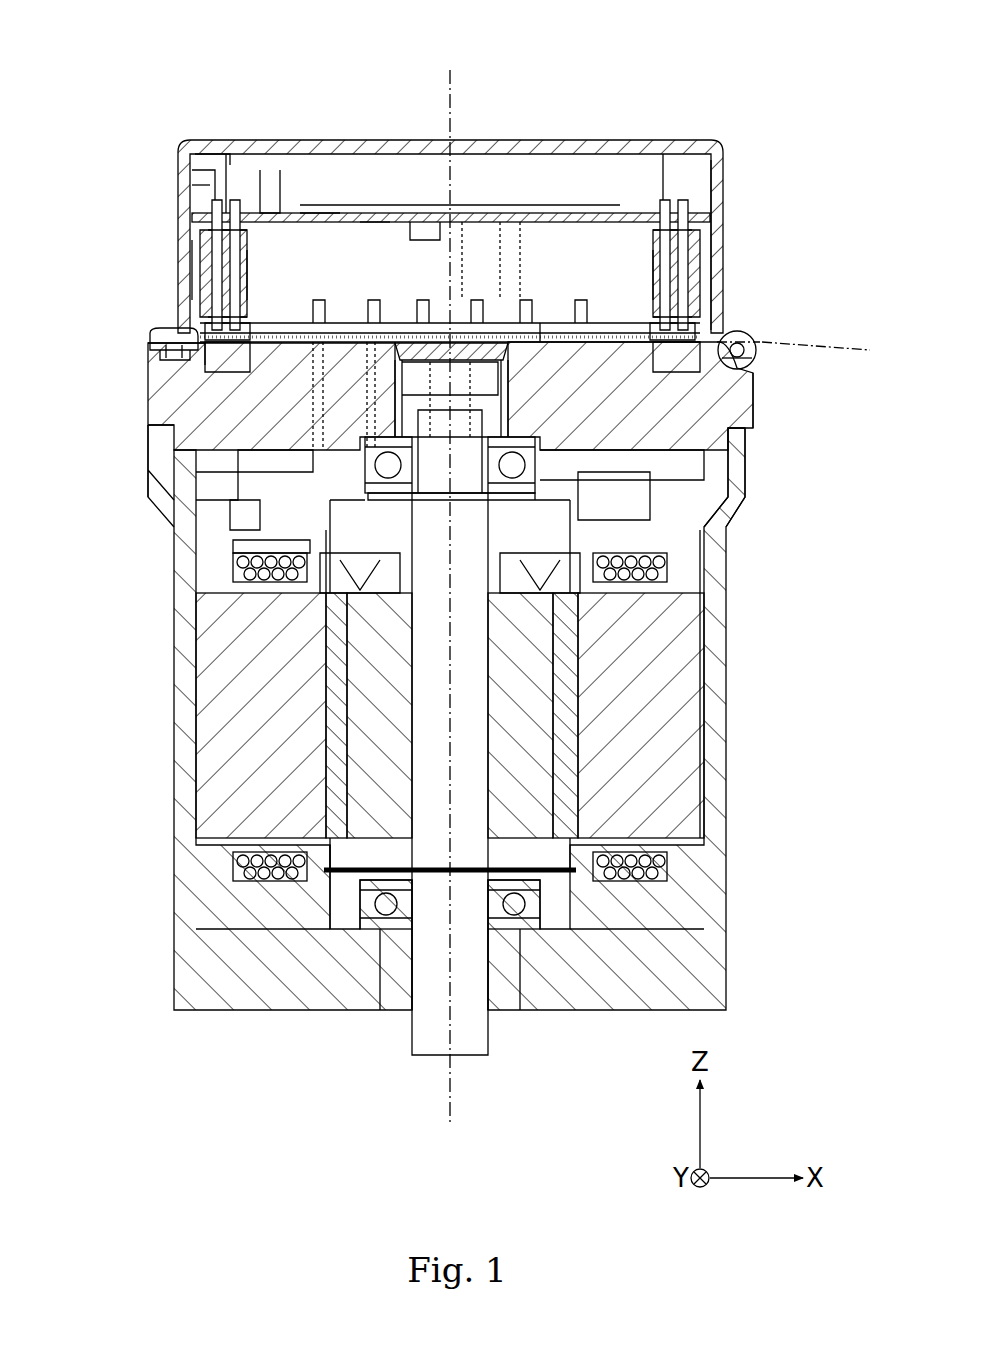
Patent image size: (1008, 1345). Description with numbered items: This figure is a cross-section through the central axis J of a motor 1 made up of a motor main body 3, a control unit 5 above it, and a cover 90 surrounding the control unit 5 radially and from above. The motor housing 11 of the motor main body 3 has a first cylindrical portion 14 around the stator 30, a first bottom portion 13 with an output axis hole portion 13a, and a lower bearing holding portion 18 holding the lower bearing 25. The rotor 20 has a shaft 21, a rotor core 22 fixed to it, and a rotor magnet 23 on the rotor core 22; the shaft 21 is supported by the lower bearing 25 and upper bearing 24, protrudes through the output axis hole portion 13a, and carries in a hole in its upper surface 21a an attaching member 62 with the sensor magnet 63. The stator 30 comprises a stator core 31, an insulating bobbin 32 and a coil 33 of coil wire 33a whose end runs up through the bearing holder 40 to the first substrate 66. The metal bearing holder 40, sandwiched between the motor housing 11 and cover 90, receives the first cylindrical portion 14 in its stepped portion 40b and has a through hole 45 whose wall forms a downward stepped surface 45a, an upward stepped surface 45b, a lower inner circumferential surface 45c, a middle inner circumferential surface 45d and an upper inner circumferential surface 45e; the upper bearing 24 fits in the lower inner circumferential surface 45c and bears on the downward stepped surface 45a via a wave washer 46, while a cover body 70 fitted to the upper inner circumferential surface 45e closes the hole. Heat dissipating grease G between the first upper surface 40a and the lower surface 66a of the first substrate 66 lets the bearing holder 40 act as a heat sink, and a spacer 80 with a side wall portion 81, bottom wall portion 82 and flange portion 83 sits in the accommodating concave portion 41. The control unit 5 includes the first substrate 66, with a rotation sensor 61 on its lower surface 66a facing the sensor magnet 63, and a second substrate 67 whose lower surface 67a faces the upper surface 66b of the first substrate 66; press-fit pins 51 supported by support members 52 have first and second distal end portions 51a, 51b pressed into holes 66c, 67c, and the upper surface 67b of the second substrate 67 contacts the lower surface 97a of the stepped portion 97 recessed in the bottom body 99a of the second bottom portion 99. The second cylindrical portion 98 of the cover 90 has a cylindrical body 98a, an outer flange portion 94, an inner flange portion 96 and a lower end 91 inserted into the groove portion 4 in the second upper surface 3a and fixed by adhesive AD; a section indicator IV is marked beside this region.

The motor 1 is at (772, 120).
The motor main body 3 is at (756, 405).
The second upper surface 3a is at (765, 350).
The groove portion 4 is at (738, 358).
The control unit 5 is at (573, 203).
The motor housing 11 is at (150, 450).
The first bottom portion 13 is at (272, 990).
The output axis hole portion 13a is at (398, 940).
The first cylindrical portion 14 is at (182, 795).
The lower bearing holding portion 18 is at (318, 985).
The rotor 20 is at (555, 772).
The shaft 21 is at (430, 1040).
The upper surface 21a is at (260, 472).
The rotor core 22 is at (555, 832).
The rotor magnet 23 is at (567, 770).
The upper bearing 24 is at (290, 556).
The lower bearing 25 is at (365, 932).
The stator 30 is at (501, 717).
The stator core 31 is at (673, 723).
The bobbin 32 is at (697, 612).
The coil 33 is at (655, 560).
The coil wire 33a is at (350, 322).
The bearing holder 40 is at (762, 454).
The first upper surface 40a is at (545, 340).
The stepped portion 40b is at (738, 431).
The accommodating concave portion 41 is at (220, 322).
The through hole 45 is at (444, 536).
The downward stepped surface 45a is at (220, 500).
The upward stepped surface 45b is at (430, 345).
The lower inner circumferential surface 45c is at (703, 637).
The middle inner circumferential surface 45d is at (240, 540).
The upper inner circumferential surface 45e is at (385, 335).
The wave washer 46 is at (505, 470).
The press-fit pin 51 is at (222, 262).
The first distal end portion 51a is at (225, 300).
The second distal end portion 51b is at (218, 210).
The support member 52 is at (250, 268).
The rotation sensor 61 is at (470, 330).
The attaching member 62 is at (620, 515).
The sensor magnet 63 is at (620, 476).
The first substrate 66 is at (520, 322).
The lower surface 66a is at (228, 355).
The upper surface 66b is at (370, 222).
The holes 66c is at (237, 285).
The second substrate 67 is at (625, 213).
The lower surface 67a is at (270, 170).
The upper surface 67b is at (330, 213).
The holes 67c is at (240, 154).
The cover body 70 is at (420, 230).
The spacer 80 is at (205, 385).
The side wall portion 81 is at (180, 352).
The bottom wall portion 82 is at (200, 370).
The flange portion 83 is at (190, 338).
The cover 90 is at (172, 243).
The lower end 91 is at (742, 430).
The outer flange portion 94 is at (752, 350).
The inner flange portion 96 is at (743, 343).
The stepped portion 97 is at (200, 185).
The lower surface 97a is at (212, 235).
The second cylindrical portion 98 is at (722, 195).
The cylindrical body 98a is at (713, 225).
The second bottom portion 99 is at (212, 143).
The bottom body 99a is at (210, 180).
The heat dissipating grease G is at (540, 330).
The central axis J is at (472, 85).
The adhesive AD is at (768, 396).
The section line IV is at (816, 359).